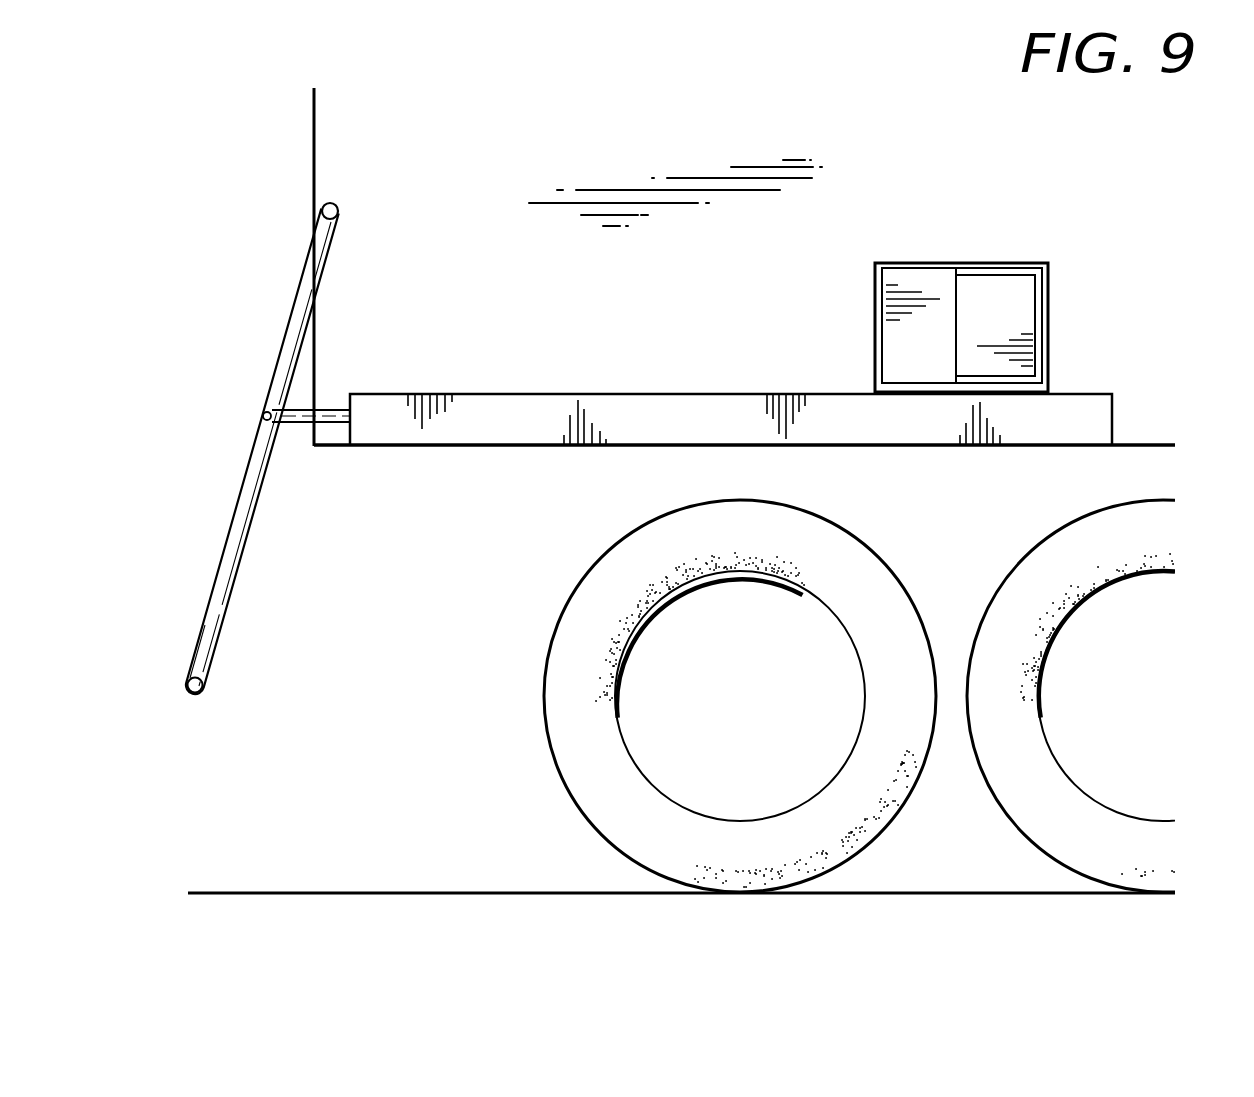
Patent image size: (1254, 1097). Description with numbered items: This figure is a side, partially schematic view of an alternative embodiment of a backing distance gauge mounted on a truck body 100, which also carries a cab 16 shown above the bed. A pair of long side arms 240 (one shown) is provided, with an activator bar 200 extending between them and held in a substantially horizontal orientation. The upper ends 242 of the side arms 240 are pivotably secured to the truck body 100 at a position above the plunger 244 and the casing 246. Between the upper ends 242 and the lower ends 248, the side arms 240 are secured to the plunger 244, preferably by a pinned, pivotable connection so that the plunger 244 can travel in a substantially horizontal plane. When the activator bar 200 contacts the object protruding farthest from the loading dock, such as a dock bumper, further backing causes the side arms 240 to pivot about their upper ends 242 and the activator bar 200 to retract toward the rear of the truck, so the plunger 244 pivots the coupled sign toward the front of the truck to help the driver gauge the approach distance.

The truck body 100 is at (633, 146).
The cab 16 is at (917, 262).
The casing 246 is at (488, 402).
The side arms 240 is at (238, 525).
The upper ends of the side arms 242 is at (317, 258).
The plunger 244 is at (330, 410).
The lower ends of the side arms 248 is at (205, 670).
The activator bar 200 is at (200, 690).